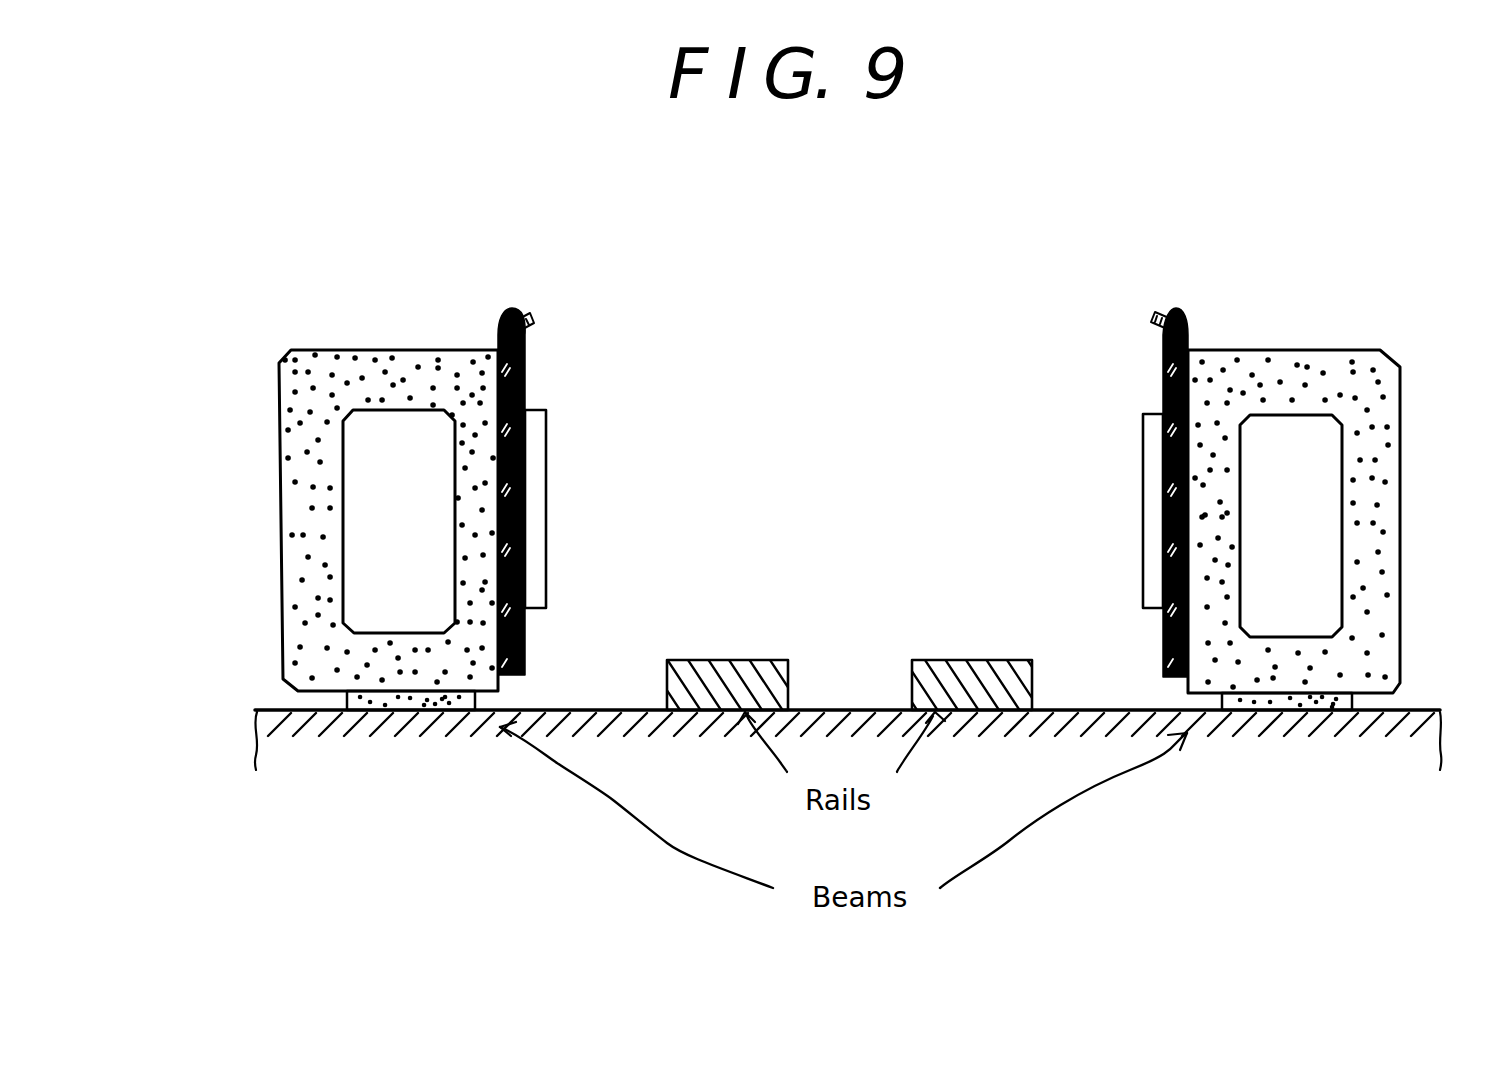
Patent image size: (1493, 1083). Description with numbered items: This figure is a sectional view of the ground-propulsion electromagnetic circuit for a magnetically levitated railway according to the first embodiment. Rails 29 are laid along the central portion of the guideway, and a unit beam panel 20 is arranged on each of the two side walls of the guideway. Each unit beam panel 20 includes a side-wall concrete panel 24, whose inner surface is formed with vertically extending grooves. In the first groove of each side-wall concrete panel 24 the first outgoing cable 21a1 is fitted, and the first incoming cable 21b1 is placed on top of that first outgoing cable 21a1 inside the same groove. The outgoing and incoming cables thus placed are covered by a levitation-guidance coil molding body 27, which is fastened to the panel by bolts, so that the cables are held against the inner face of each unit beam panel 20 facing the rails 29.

The unit beam panel 20 is at (257, 337).
The first outgoing cable 21a1 is at (1160, 318).
The first incoming cable 21b1 is at (1250, 253).
The side-wall concrete panel 24 is at (300, 447).
The levitation-guidance coil molding body 27 is at (564, 422).
The rail 29 is at (715, 660).